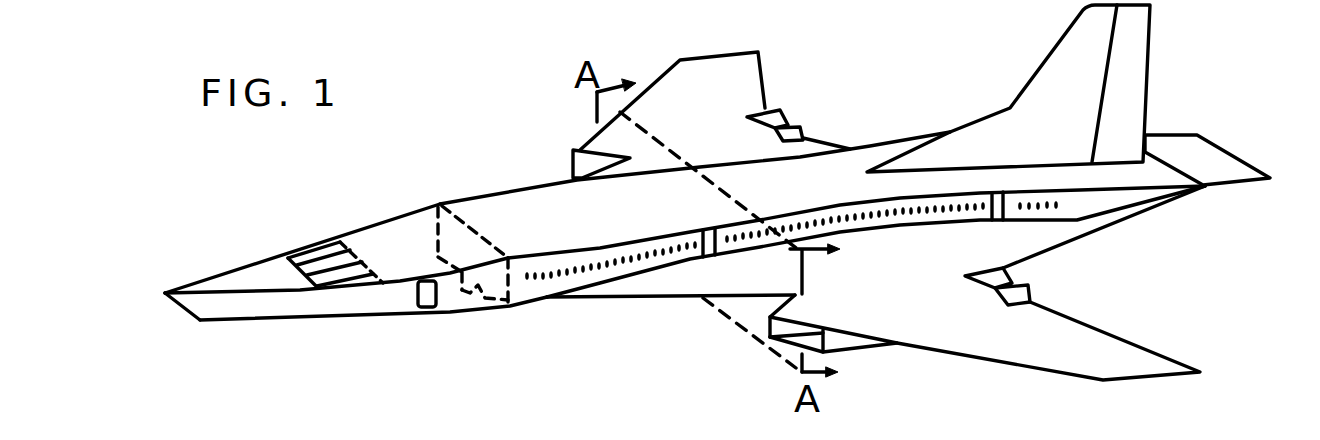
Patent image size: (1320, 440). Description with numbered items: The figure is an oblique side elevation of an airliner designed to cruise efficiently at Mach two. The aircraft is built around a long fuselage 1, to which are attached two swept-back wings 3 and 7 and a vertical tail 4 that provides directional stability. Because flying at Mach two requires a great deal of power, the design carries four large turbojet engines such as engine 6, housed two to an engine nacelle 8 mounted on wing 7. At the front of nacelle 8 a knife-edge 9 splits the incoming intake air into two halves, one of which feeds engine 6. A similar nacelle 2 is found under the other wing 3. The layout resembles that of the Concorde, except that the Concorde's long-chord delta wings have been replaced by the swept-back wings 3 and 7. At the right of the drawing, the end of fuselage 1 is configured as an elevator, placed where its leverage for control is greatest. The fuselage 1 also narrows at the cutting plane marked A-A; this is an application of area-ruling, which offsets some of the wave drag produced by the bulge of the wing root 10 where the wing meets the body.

The fuselage 1 is at (437, 206).
The engine nacelle 2 is at (573, 150).
The wing 3 is at (762, 73).
The vertical tail 4 is at (1032, 75).
The turbojet engine 6 is at (1032, 288).
The wing 7 is at (1090, 318).
The engine nacelle 8 is at (854, 348).
The knife-edge 9 is at (770, 317).
The wing root 10 is at (668, 300).